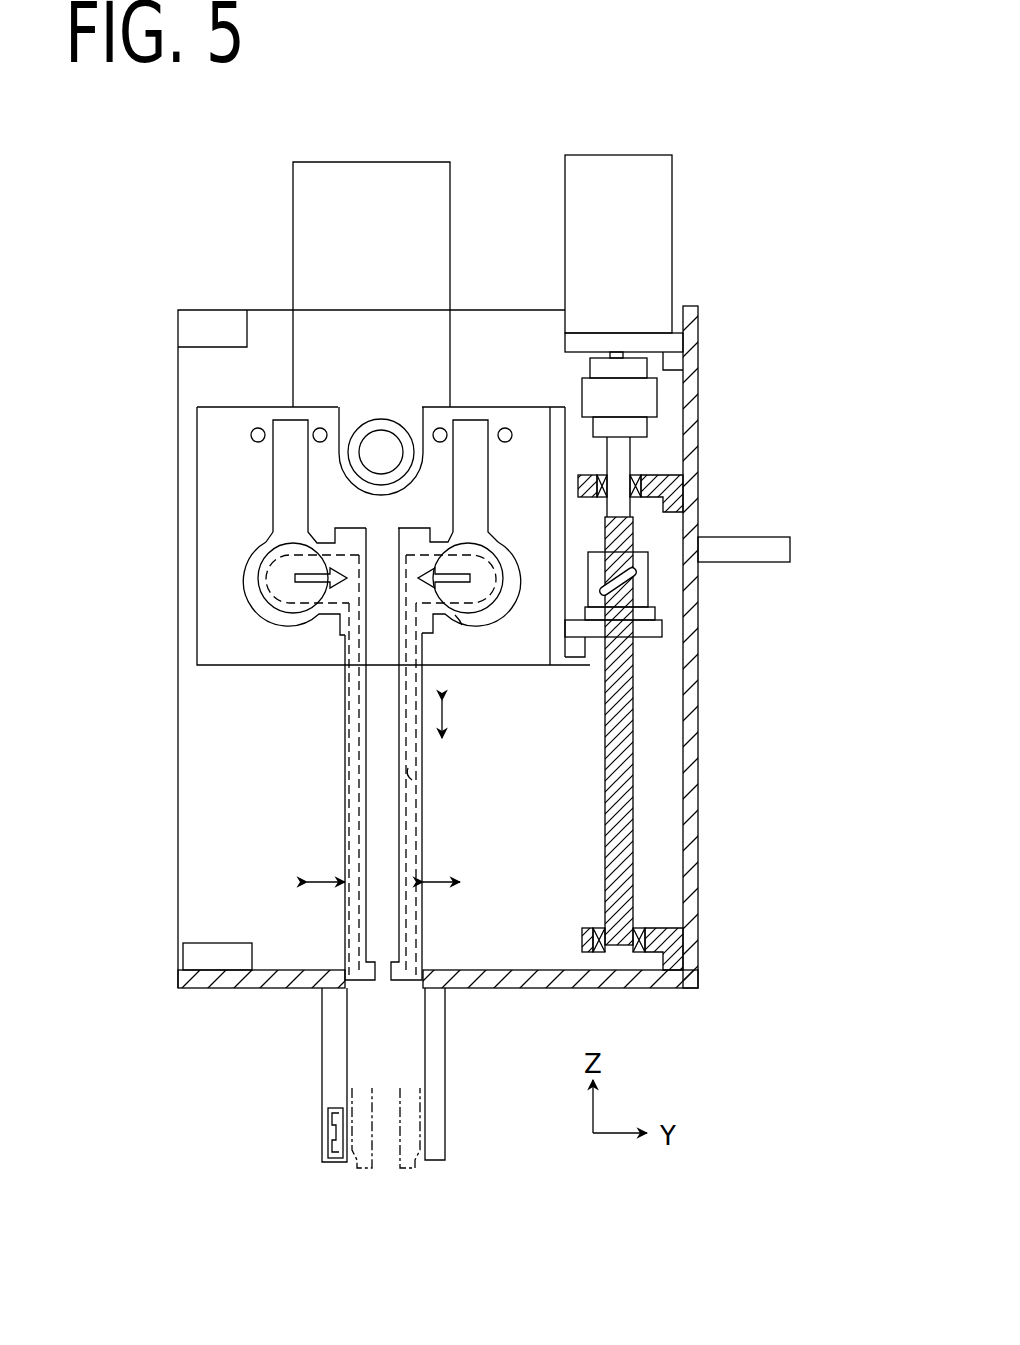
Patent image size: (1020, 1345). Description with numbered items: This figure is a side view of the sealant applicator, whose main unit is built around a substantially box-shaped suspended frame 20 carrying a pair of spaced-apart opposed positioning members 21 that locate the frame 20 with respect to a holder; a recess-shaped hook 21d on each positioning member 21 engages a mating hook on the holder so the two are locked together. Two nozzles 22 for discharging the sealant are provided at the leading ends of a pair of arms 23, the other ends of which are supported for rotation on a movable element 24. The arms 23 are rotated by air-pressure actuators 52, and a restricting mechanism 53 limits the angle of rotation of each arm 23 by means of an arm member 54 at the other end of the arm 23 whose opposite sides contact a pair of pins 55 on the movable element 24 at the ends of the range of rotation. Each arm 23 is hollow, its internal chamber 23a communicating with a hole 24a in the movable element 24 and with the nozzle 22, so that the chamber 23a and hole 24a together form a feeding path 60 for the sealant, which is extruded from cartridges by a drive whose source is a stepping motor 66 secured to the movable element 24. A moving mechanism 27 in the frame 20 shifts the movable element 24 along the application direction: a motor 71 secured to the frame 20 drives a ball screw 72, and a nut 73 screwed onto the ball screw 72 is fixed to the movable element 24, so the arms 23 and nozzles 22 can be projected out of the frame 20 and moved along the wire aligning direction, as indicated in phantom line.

The suspended frame 20 is at (232, 982).
The positioning member 21 is at (335, 1068).
The recess-shaped hook 21d is at (330, 1147).
The nozzle 22 is at (345, 960).
The arm 23 is at (400, 797).
The internal chamber 23a is at (410, 773).
The movable element 24 is at (230, 663).
The hole 24a is at (458, 620).
The moving mechanism 27 is at (702, 562).
The air-pressure actuator 52 is at (275, 620).
The restricting mechanism 53 is at (326, 404).
The arm member 54 is at (285, 487).
The pin 55 is at (318, 428).
The feeding path 60 is at (265, 592).
The stepping motor 66 is at (430, 230).
The motor 71 is at (648, 318).
The ball screw 72 is at (627, 530).
The nut 73 is at (669, 570).